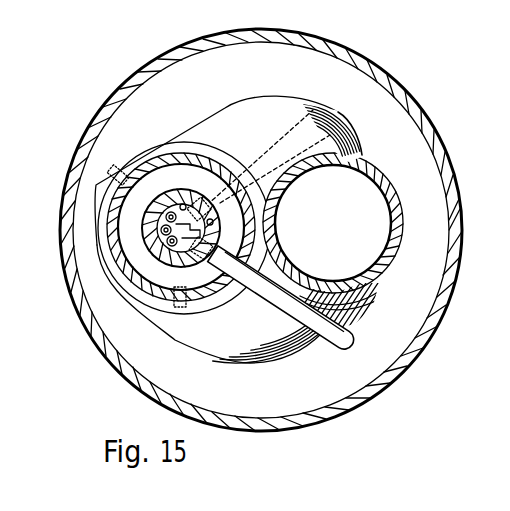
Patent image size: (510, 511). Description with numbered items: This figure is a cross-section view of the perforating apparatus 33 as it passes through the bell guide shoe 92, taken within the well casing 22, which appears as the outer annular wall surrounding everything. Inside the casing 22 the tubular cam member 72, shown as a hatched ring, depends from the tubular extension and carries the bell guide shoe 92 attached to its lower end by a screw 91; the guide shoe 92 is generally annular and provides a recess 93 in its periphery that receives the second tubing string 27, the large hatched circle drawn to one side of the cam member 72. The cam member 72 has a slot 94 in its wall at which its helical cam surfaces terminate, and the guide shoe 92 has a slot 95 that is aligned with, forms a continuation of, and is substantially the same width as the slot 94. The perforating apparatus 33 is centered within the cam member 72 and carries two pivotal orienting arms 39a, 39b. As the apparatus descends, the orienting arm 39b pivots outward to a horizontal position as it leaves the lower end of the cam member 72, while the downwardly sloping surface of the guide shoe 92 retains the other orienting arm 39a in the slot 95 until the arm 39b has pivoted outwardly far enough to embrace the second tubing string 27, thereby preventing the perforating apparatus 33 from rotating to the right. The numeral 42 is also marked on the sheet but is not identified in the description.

The casing 22 is at (408, 347).
The second tubing string 27 is at (393, 215).
The perforating apparatus 33 is at (132, 231).
The orienting arm 39a is at (352, 334).
The orienting arm 39b is at (337, 107).
The housing 42 is at (509, 7).
The tubular cam member 72 is at (185, 155).
The screw 91 is at (113, 165).
The bell guide shoe 92 is at (247, 97).
The recess 93 is at (360, 156).
The slot 94 is at (228, 274).
The slot 95 is at (322, 344).